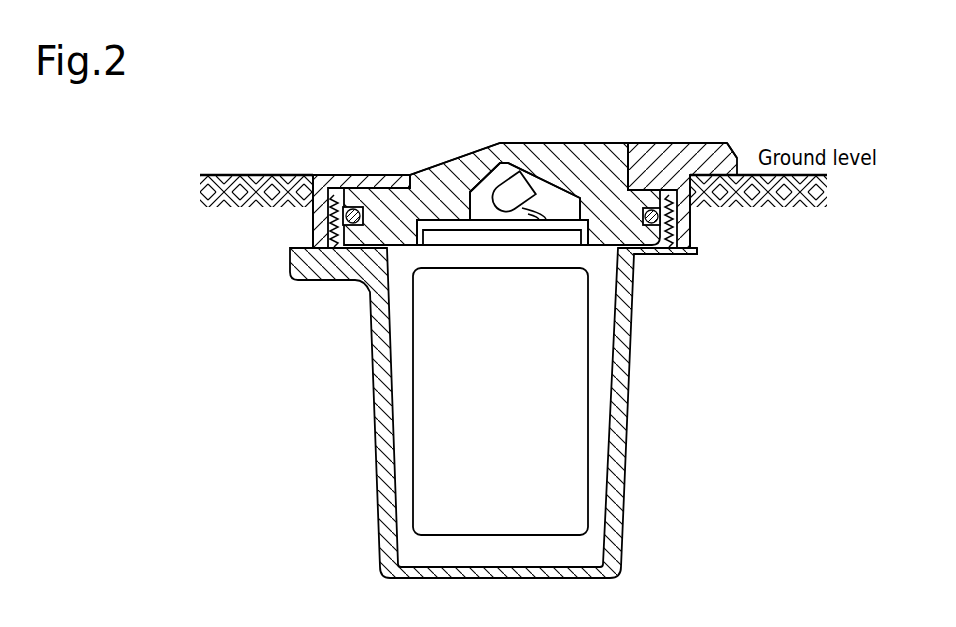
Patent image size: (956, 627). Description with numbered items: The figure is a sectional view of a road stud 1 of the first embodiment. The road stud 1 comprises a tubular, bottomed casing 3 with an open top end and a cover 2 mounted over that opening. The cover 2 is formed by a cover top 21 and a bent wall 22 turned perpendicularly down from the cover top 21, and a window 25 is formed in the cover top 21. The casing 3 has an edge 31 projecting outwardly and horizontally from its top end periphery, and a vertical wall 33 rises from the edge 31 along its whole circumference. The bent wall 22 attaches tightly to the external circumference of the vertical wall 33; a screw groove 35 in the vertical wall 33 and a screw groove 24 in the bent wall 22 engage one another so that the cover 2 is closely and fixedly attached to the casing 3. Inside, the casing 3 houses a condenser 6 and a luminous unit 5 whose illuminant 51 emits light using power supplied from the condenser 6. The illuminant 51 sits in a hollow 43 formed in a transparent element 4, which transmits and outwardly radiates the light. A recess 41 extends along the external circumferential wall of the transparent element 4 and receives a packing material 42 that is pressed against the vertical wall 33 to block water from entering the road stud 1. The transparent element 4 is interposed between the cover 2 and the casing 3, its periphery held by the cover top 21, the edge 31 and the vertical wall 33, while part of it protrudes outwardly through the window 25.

The road stud 1 is at (687, 434).
The cover 2 is at (665, 147).
The cover top 21 is at (357, 175).
The bent wall 22 is at (320, 227).
The screw groove 24 is at (322, 250).
The window 25 is at (628, 147).
The casing 3 is at (617, 507).
The edge 31 is at (655, 257).
The vertical wall 33 is at (688, 147).
The screw groove 35 is at (682, 217).
The transparent element 4 is at (565, 147).
The recess 41 is at (322, 182).
The packing material 42 is at (698, 250).
The hollow 43 is at (470, 203).
The luminous unit 5 is at (493, 190).
The illuminant 51 is at (513, 183).
The condenser 6 is at (433, 453).